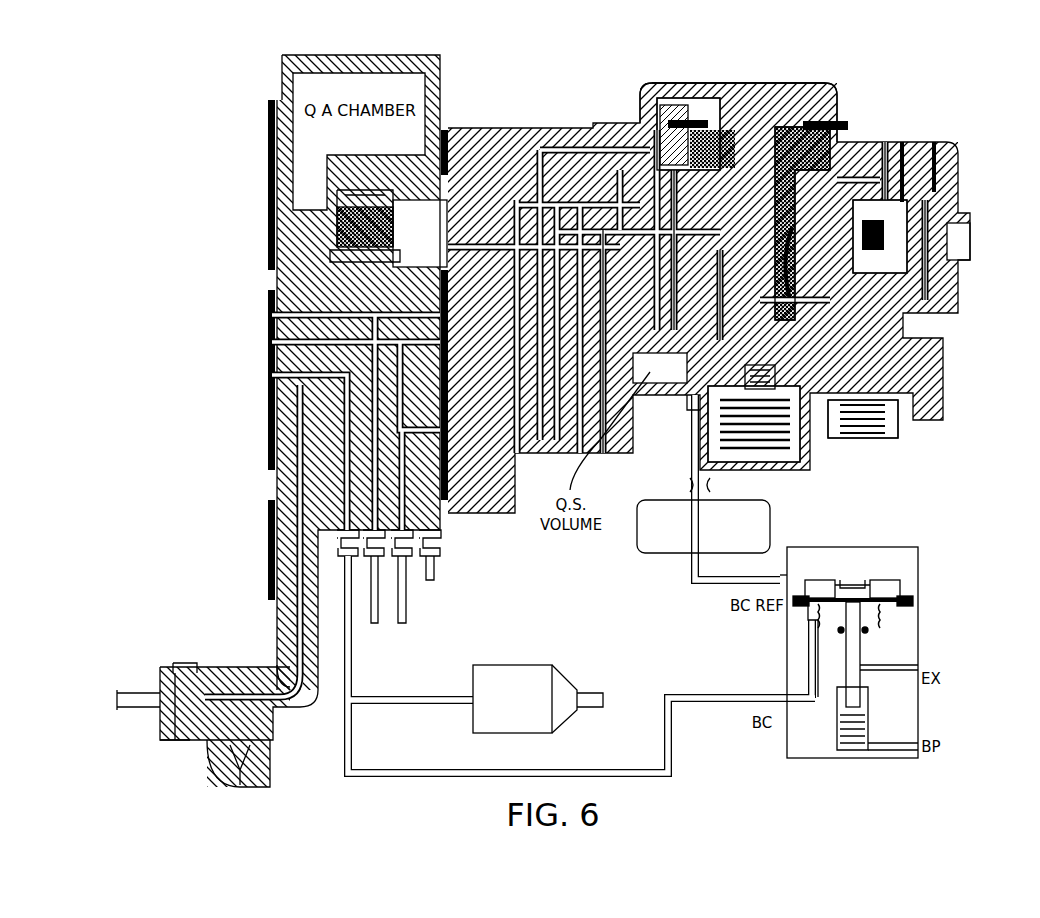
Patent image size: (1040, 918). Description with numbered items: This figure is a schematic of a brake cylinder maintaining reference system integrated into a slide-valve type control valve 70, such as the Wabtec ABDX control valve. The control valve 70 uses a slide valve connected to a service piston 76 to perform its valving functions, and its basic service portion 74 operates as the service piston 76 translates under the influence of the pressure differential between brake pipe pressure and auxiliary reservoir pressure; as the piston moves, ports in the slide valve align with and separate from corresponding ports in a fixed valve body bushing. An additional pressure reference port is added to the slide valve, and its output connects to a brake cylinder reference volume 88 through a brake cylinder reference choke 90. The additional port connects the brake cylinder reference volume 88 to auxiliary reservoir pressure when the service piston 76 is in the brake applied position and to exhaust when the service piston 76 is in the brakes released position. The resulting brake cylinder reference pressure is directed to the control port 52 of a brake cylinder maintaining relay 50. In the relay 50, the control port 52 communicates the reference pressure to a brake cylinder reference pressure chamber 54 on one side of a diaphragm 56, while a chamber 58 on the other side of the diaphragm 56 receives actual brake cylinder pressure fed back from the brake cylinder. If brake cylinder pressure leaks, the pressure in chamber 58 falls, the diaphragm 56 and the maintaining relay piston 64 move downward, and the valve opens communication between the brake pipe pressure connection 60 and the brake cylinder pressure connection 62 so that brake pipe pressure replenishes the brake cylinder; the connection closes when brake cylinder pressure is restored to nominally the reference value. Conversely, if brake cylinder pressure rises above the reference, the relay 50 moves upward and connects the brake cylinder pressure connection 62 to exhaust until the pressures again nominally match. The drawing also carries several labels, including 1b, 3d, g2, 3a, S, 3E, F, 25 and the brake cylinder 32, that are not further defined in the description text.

The slide-valve type control valve 70 is at (630, 80).
The service portion 74 is at (793, 82).
The passage 1b is at (657, 112).
The service piston 76 is at (818, 124).
The passage 3d is at (779, 236).
The chamber g2 is at (728, 295).
The passage 3a is at (764, 326).
The supply chamber S is at (880, 264).
The exhaust port 3E is at (686, 412).
The spring chamber F is at (766, 424).
The check valve 25 is at (887, 424).
The brake cylinder reference choke 90 is at (728, 483).
The brake cylinder maintaining relay 50 is at (900, 546).
The brake cylinder reference volume 88 is at (633, 545).
The control port 52 is at (775, 576).
The brake cylinder reference pressure chamber 54 is at (905, 595).
The brake cylinder pressure chamber 58 is at (798, 610).
The diaphragm 56 is at (900, 608).
The maintaining relay piston 64 is at (832, 650).
The brake cylinder pressure connection 62 is at (793, 705).
The brake pipe pressure connection 60 is at (900, 760).
The brake cylinder 32 is at (570, 680).